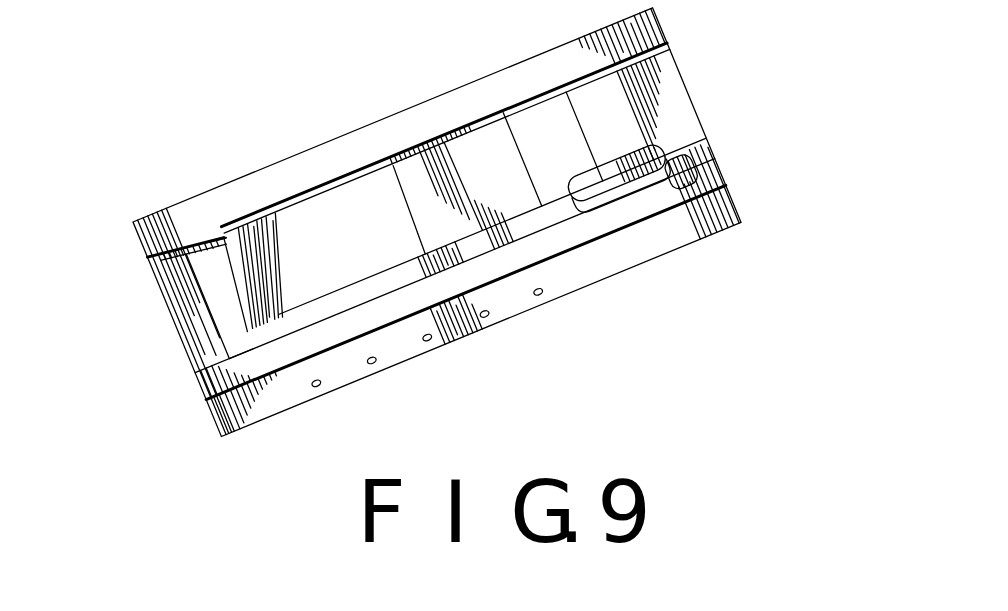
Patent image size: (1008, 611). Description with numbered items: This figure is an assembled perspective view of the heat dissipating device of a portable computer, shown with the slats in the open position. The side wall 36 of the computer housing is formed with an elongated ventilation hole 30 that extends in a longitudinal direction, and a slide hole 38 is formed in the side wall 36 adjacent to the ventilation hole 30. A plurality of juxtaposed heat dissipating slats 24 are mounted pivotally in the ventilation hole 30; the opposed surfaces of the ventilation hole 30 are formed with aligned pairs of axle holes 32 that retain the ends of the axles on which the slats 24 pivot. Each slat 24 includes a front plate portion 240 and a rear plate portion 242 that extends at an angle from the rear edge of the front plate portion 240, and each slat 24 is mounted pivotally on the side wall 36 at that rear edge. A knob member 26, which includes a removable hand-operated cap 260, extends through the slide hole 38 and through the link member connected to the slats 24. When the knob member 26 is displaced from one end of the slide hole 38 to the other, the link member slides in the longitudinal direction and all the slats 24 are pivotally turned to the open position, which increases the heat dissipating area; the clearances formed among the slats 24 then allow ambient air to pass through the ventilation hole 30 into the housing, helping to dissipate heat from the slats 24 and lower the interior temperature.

The heat dissipating slats 24 is at (237, 262).
The front plate portion 240 is at (305, 225).
The rear plate portion 242 is at (230, 233).
The knob member 26 is at (598, 219).
The hand-operated cap 260 is at (620, 162).
The ventilation hole 30 is at (195, 262).
The axle holes 32 is at (430, 340).
The side wall 36 is at (313, 165).
The slide hole 38 is at (727, 218).